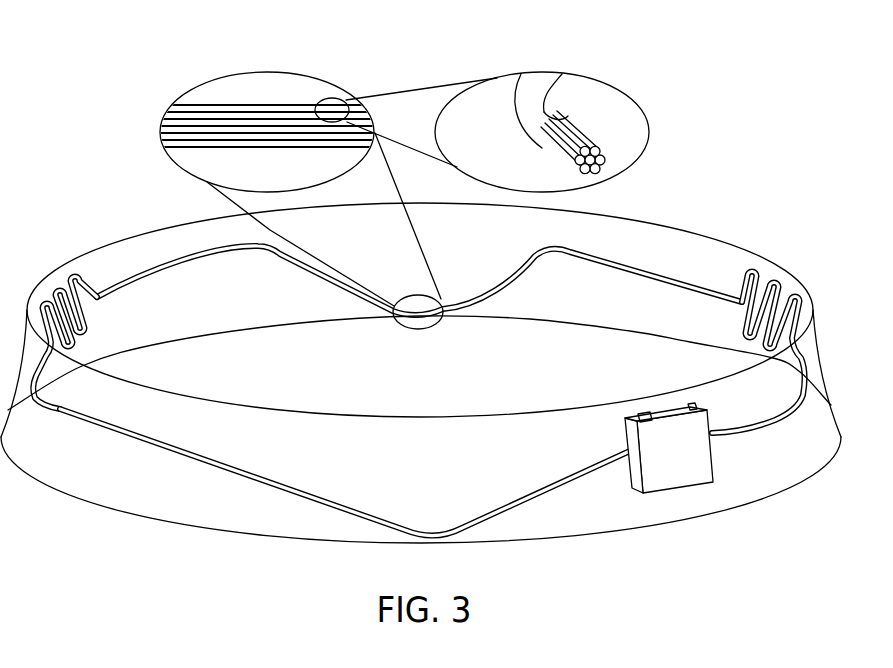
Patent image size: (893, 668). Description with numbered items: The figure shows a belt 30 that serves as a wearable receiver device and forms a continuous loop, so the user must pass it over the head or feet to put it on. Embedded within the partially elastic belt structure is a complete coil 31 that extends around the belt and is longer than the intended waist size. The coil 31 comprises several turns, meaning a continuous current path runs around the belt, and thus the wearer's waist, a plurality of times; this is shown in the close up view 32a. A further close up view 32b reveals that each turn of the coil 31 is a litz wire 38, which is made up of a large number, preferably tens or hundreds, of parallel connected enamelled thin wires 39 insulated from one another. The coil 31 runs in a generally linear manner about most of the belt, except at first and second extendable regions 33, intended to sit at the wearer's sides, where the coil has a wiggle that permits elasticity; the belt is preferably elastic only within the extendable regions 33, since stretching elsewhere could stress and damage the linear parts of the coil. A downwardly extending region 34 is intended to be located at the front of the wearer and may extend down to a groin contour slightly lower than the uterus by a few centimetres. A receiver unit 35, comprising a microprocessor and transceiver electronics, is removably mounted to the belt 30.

The belt 30 is at (713, 116).
The coil 31 is at (555, 258).
The close up view of coil turns 32a is at (160, 135).
The close up view of litz wire 32b is at (497, 78).
The extendable regions 33 is at (778, 283).
The downwardly extending region 34 is at (362, 515).
The receiver unit 35 is at (680, 481).
The litz wire 38 is at (542, 80).
The thin wires 39 is at (570, 130).